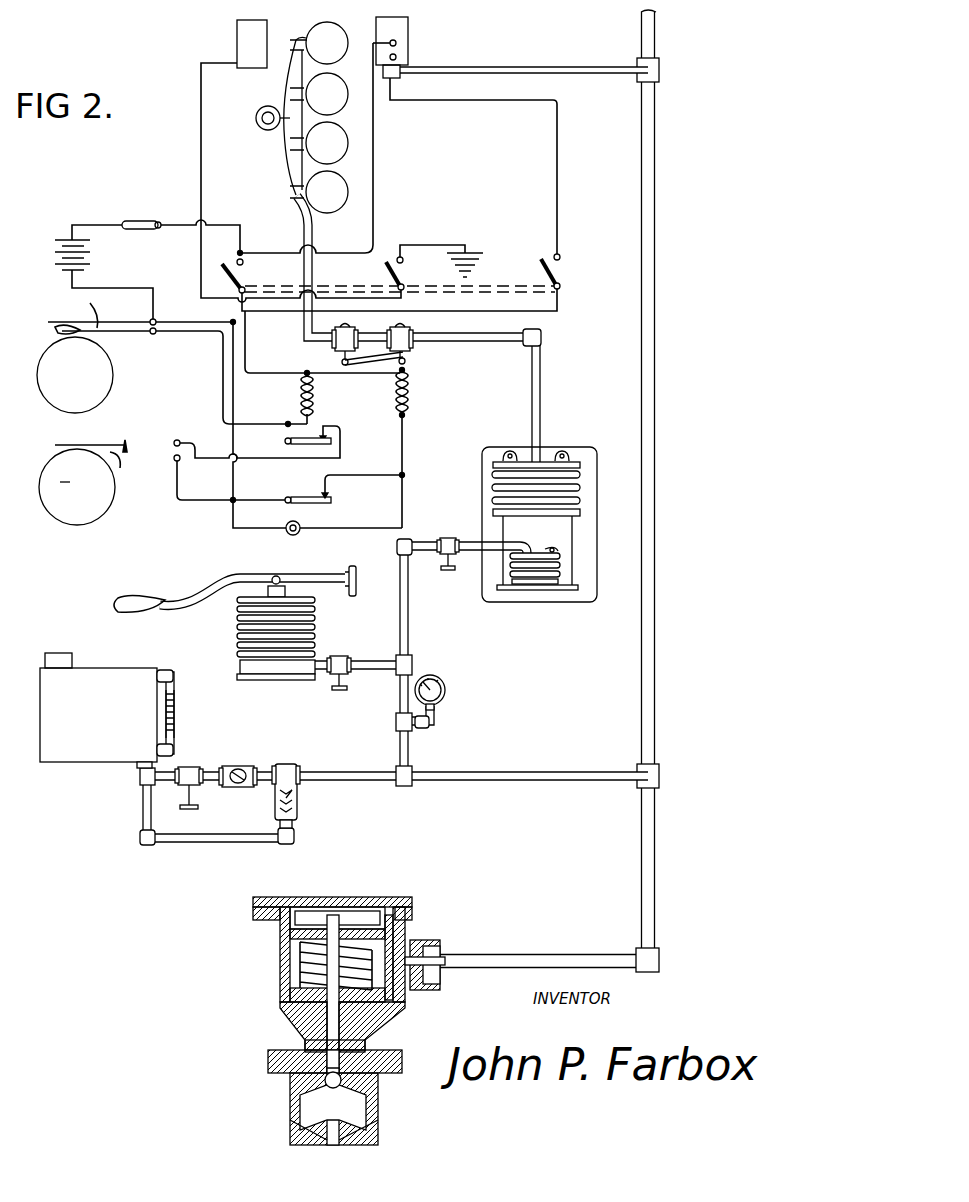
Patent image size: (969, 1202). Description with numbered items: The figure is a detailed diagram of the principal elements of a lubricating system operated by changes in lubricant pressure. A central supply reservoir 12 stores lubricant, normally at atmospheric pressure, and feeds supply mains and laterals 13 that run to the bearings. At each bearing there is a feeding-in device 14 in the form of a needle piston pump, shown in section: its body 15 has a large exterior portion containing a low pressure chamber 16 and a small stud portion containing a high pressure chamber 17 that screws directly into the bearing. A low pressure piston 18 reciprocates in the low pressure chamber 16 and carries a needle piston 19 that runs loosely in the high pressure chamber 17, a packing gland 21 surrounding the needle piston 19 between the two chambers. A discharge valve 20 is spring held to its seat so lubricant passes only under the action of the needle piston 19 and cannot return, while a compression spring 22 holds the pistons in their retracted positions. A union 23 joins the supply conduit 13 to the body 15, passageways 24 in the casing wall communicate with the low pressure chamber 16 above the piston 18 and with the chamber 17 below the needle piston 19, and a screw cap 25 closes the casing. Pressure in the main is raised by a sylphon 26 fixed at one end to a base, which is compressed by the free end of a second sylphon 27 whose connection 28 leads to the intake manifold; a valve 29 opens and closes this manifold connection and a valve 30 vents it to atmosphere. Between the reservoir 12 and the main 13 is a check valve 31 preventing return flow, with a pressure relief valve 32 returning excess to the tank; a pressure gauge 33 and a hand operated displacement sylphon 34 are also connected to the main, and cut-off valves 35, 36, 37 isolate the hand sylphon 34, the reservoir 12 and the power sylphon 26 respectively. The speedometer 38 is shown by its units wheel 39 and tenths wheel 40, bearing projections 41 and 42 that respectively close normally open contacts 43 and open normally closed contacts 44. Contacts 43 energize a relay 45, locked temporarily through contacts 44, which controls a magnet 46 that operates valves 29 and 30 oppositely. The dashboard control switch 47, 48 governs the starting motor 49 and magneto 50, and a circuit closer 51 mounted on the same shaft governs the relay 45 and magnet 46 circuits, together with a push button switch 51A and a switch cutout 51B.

The central supply reservoir 12 is at (107, 710).
The supply mains and laterals 13 is at (656, 530).
The feeding-in device 14 is at (400, 78).
The pump body 15 is at (280, 950).
The low pressure chamber 16 is at (343, 1005).
The high pressure chamber 17 is at (305, 1045).
The low pressure piston 18 is at (323, 915).
The needle piston 19 is at (350, 920).
The discharge valve 20 is at (320, 1088).
The packing gland 21 is at (290, 995).
The compression spring 22 is at (290, 960).
The union 23 is at (440, 985).
The passageways 24 is at (388, 1010).
The screw cap 25 is at (290, 897).
The sylphon 26 is at (550, 580).
The second sylphon 27 is at (578, 495).
The manifold connection 28 is at (541, 372).
The manifold valve 29 is at (335, 350).
The vent valve 30 is at (412, 350).
The check valve 31 is at (238, 787).
The pressure relief valve 32 is at (297, 790).
The pressure gauge 33 is at (445, 688).
The hand operated displacement sylphon 34 is at (316, 630).
The cut-off valve 35 is at (342, 686).
The cut-off valve 36 is at (189, 802).
The cut-off valve 37 is at (446, 567).
The speedometer 38 is at (52, 415).
The units wheel 39 is at (38, 358).
The tenths wheel 40 is at (39, 497).
The projection 41 is at (52, 333).
The projection 42 is at (122, 470).
The normally open spring contacts 43 is at (80, 311).
The normally closed spring contacts 44 is at (150, 445).
The relay 45 is at (300, 397).
The magnet 46 is at (394, 397).
The control switch 47 is at (416, 267).
The control switch 48 is at (564, 271).
The starting motor 49 is at (400, 31).
The magneto 50 is at (237, 37).
The circuit closer 51 is at (389, 278).
The push button switch 51A is at (289, 536).
The switch cutout 51B is at (140, 220).